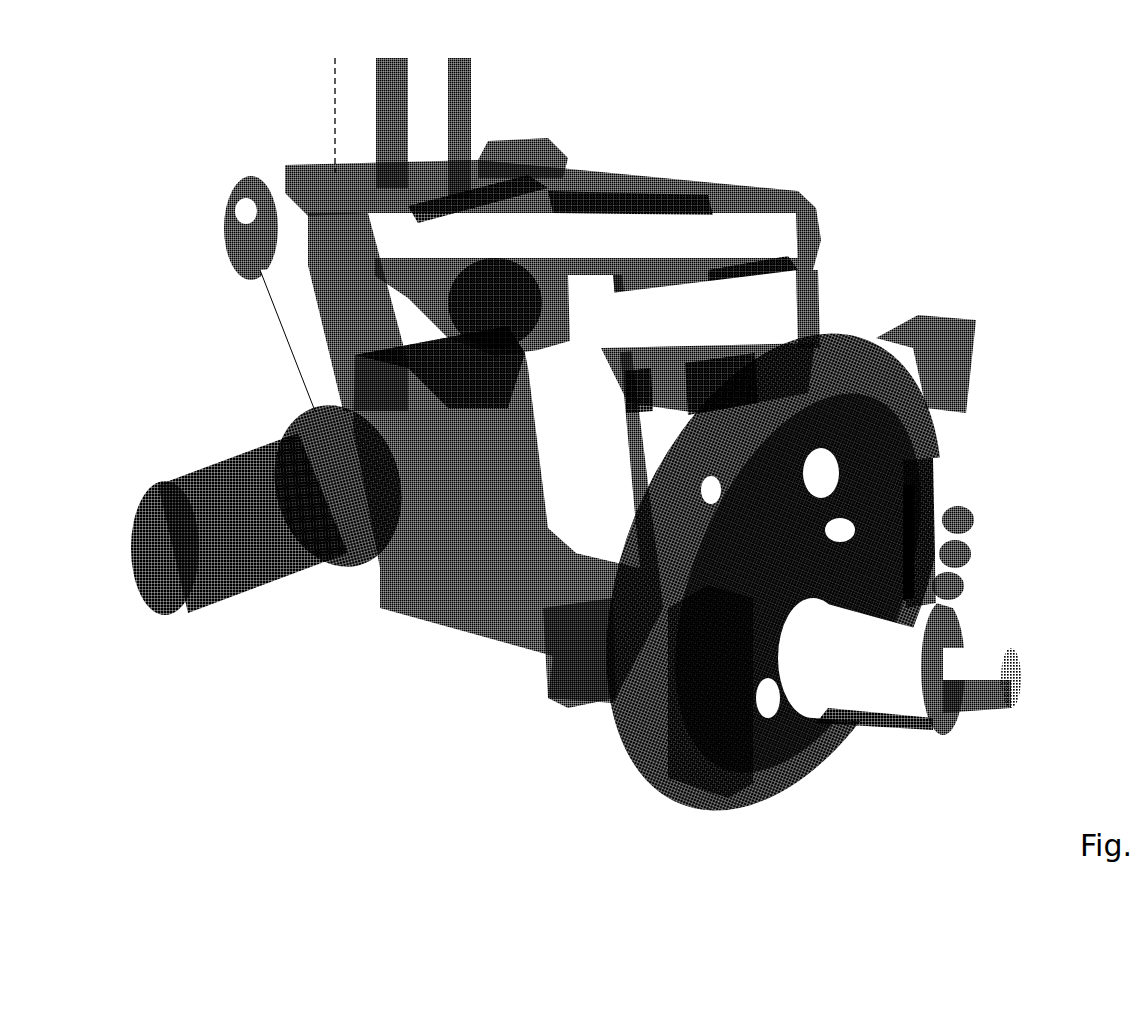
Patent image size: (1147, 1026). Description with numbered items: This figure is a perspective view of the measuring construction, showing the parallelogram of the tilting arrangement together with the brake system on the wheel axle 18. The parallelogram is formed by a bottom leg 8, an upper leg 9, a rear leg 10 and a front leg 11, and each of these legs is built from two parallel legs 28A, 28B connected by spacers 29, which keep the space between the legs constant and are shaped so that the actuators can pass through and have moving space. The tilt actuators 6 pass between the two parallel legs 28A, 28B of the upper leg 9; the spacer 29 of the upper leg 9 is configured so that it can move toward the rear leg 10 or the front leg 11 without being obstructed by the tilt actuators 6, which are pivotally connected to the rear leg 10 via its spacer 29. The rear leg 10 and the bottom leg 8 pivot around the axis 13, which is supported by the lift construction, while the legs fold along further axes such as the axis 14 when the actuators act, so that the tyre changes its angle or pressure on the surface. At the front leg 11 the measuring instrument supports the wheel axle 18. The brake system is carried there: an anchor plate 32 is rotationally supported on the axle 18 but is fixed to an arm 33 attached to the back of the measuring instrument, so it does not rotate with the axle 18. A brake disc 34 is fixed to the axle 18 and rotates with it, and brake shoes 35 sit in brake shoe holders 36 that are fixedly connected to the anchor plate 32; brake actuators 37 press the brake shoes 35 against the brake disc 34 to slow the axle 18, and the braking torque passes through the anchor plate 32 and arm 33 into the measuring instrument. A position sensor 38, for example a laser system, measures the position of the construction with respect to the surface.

The tilt actuator 6 is at (345, 72).
The bottom leg 8 is at (490, 480).
The upper leg 9 is at (663, 183).
The rear leg 10 is at (275, 340).
The front leg 11 is at (711, 265).
The axis 13 is at (180, 505).
The axis 14 is at (555, 652).
The wheel axle 18 is at (960, 660).
The parallel leg 28A is at (335, 685).
The parallel leg 28B is at (760, 305).
The spacer 29 is at (617, 180).
The anchor plate 32 is at (925, 383).
The arm 33 is at (745, 352).
The brake disc 34 is at (908, 432).
The brake shoe 35 is at (918, 493).
The brake shoe holder 36 is at (930, 463).
The brake actuator 37 is at (962, 570).
The position sensor 38 is at (945, 352).